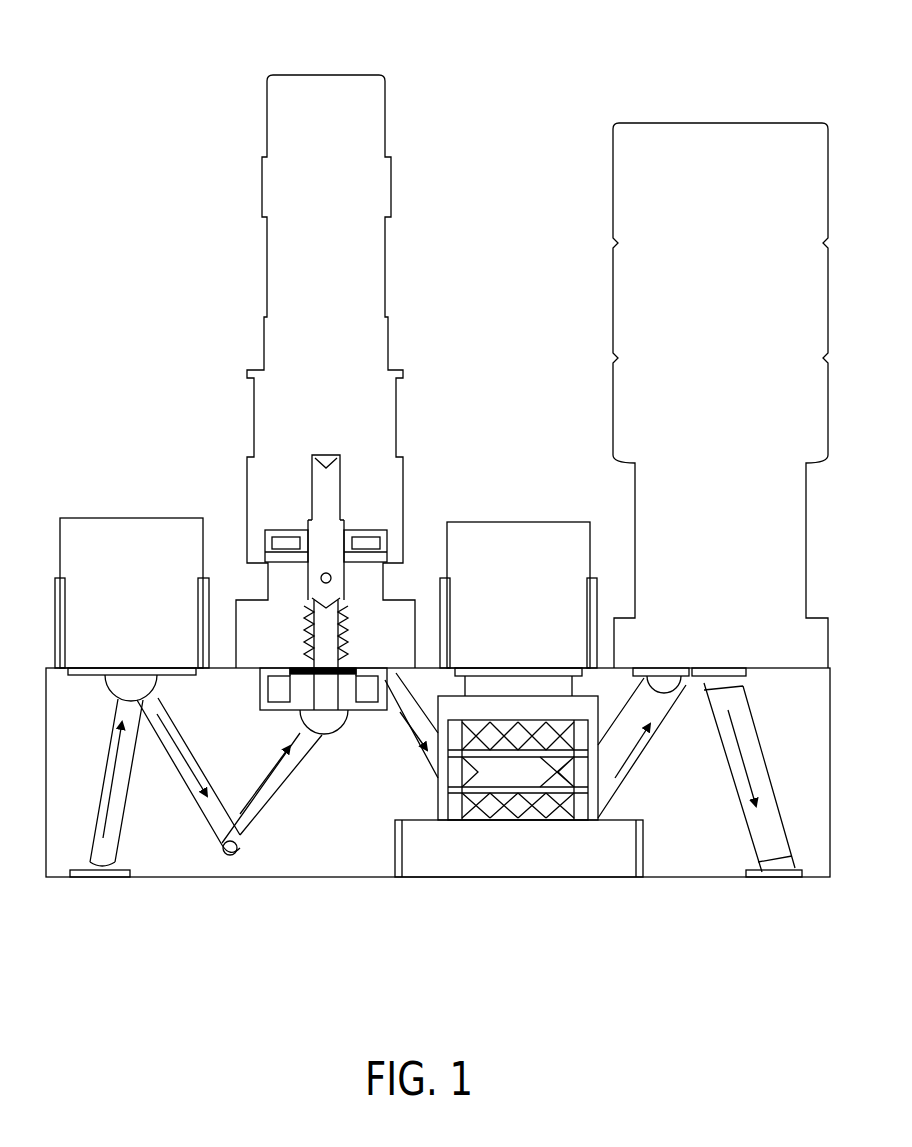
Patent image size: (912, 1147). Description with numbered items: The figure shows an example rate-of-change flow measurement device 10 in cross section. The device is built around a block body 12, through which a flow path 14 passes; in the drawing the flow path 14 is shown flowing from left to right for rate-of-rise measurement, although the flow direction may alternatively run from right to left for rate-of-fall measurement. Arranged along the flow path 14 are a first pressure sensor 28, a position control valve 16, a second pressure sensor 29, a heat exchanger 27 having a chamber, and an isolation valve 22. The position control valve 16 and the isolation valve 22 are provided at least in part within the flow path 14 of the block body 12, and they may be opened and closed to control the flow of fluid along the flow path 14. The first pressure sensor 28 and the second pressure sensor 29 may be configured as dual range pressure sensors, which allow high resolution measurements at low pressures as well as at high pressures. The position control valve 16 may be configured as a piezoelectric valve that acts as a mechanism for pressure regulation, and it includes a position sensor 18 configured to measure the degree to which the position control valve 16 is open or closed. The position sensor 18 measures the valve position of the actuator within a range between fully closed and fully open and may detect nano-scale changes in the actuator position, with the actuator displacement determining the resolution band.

The rate-of-change flow measurement device 10 is at (62, 96).
The block body 12 is at (438, 772).
The flow path 14 is at (128, 766).
The position control valve 16 is at (325, 371).
The position sensor 18 is at (323, 594).
The isolation valve 22 is at (720, 395).
The heat exchanger 27 is at (519, 776).
The first pressure sensor 28 is at (132, 609).
The second pressure sensor 29 is at (518, 599).